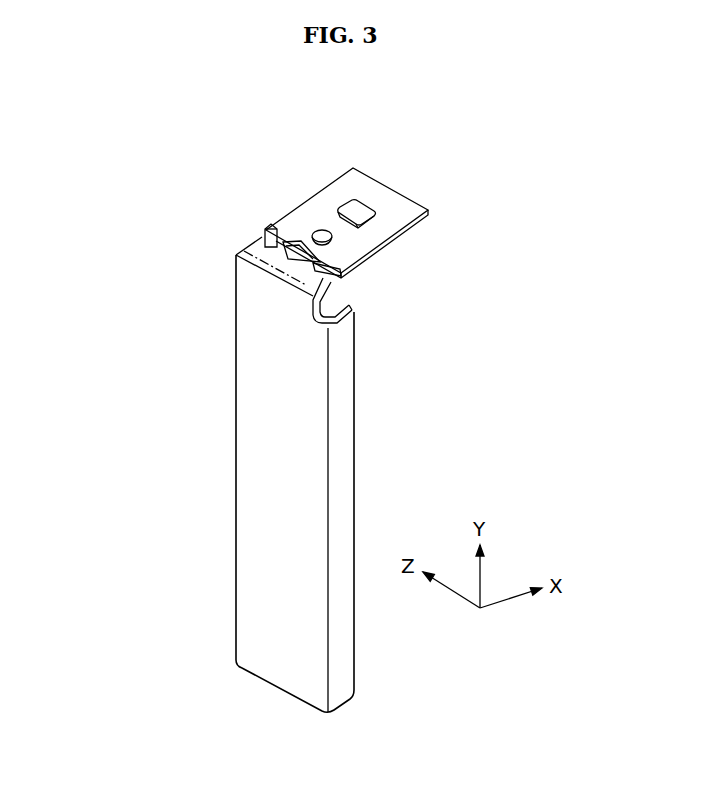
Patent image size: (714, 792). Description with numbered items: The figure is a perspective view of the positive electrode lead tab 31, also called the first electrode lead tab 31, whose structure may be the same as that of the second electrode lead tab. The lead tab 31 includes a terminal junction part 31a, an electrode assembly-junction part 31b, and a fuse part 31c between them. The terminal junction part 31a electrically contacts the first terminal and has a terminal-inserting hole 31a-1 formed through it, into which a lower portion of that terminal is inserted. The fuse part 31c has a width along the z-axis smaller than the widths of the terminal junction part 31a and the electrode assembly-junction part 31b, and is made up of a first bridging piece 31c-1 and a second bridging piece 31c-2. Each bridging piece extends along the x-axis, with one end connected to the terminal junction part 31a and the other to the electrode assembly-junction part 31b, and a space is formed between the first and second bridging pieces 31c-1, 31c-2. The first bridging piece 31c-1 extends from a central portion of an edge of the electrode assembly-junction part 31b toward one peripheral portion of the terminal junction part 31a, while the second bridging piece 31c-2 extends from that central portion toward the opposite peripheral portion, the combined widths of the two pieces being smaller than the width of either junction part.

The first electrode lead tab 31 is at (370, 162).
The terminal junction part 31a is at (387, 199).
The terminal-inserting hole 31a-1 is at (347, 207).
The electrode assembly-junction part 31b is at (244, 437).
The fuse part 31c is at (292, 255).
The first bridging piece 31c-1 is at (262, 237).
The second bridging piece 31c-2 is at (337, 275).